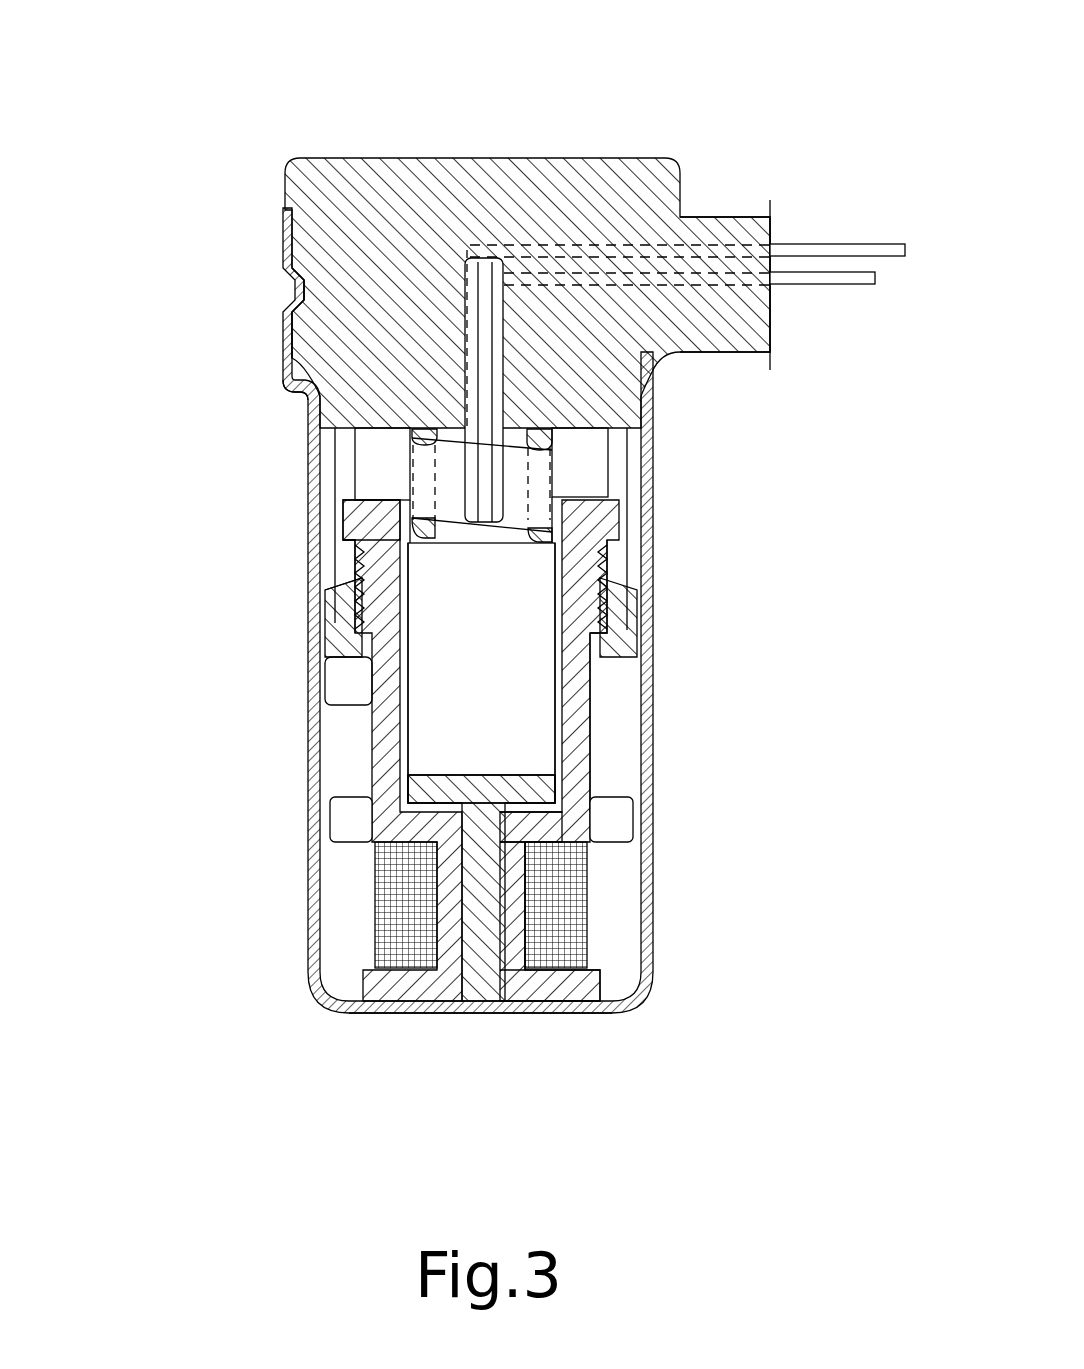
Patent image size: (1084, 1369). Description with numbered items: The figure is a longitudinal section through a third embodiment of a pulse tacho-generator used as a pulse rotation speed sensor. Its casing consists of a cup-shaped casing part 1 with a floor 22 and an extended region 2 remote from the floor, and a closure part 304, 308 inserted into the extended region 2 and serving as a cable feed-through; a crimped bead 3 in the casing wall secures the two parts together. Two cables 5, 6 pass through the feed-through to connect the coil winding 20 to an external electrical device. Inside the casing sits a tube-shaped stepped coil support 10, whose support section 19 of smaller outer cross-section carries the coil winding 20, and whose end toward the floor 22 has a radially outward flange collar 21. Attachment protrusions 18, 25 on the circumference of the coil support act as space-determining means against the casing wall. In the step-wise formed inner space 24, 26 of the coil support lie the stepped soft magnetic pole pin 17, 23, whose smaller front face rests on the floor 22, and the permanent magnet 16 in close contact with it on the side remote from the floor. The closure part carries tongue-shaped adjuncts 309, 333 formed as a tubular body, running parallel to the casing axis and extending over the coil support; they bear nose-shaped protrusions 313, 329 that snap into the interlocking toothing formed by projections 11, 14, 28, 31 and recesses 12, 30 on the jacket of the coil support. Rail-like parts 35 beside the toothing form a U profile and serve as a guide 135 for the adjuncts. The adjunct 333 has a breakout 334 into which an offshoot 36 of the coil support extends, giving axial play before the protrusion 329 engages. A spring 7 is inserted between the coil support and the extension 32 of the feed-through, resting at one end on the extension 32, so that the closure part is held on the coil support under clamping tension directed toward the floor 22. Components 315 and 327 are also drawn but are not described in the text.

The cup-shaped casing part 1 is at (320, 420).
The extended region 2 is at (283, 318).
The bead 3 is at (284, 292).
The cable 5 is at (492, 250).
The cable 6 is at (520, 280).
The spring 7 is at (533, 487).
The coil support 10 is at (610, 455).
The projection 11 is at (605, 510).
The recess 12 is at (615, 582).
The projection 14 is at (517, 670).
The permanent magnet 16 is at (545, 795).
The pole pin 17 is at (607, 790).
The attachment protrusion 18 is at (560, 860).
The support section 19 is at (615, 835).
The coil winding 20 is at (610, 975).
The flange collar 21 is at (612, 985).
The floor 22 is at (520, 1005).
The pole pin 23 is at (477, 993).
The inner space 24 is at (453, 990).
The attachment protrusion 25 is at (355, 830).
The inner space 26 is at (385, 785).
The projection 28 is at (330, 662).
The recess 30 is at (352, 600).
The projection 31 is at (365, 572).
The extension 32 is at (300, 396).
The rail-like part 35 is at (608, 548).
The offshoot 36 is at (372, 492).
The guide 135 is at (605, 672).
The closure part 304 is at (283, 212).
The closure part 308 is at (720, 237).
The tongue-shaped adjunct 309 is at (620, 448).
The protrusion 313 is at (618, 612).
The cup wall 315 is at (590, 745).
The cup wall 327 is at (405, 715).
The protrusion 329 is at (345, 588).
The tongue-shaped adjunct 333 is at (342, 488).
The breakout 334 is at (350, 535).